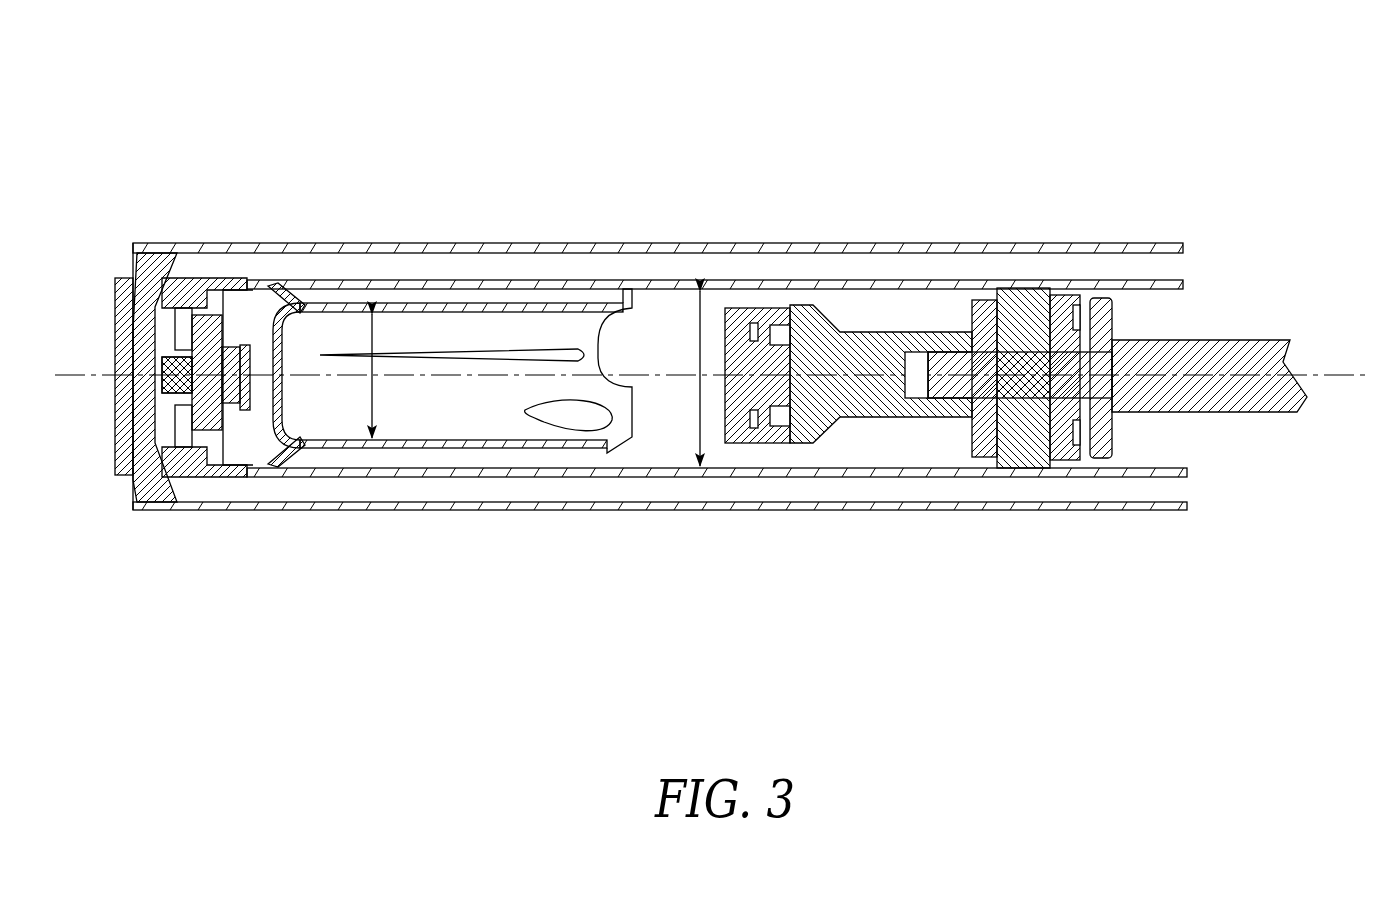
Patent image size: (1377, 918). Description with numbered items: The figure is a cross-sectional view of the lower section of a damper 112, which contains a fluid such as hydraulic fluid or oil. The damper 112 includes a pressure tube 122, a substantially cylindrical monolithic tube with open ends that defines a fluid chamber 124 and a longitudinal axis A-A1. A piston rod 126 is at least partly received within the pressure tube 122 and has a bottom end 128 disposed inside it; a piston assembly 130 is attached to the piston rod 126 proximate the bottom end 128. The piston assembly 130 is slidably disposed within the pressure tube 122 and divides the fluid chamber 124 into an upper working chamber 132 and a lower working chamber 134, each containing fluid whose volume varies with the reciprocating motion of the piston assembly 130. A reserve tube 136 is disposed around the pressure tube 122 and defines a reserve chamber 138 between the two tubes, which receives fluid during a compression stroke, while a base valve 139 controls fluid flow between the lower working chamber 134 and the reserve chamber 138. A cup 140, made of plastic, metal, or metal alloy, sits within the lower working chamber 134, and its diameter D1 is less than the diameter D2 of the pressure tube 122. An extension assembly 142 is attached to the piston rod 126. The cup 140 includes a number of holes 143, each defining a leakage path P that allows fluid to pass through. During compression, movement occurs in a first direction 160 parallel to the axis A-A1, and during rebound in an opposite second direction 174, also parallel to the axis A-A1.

The damper 112 is at (1278, 104).
The pressure tube 122 is at (483, 280).
The fluid chamber 124 is at (764, 305).
The piston rod 126 is at (1250, 414).
The bottom end 128 is at (924, 376).
The piston assembly 130 is at (1019, 298).
The upper working chamber 132 is at (1143, 429).
The lower working chamber 134 is at (647, 434).
The reserve tube 136 is at (843, 243).
The reserve chamber 138 is at (717, 271).
The base valve 139 is at (168, 322).
The cup 140 is at (385, 289).
The extension assembly 142 is at (866, 430).
The holes 143 is at (266, 309).
The first direction 160 is at (246, 213).
The second direction 174 is at (277, 547).
The leakage path P is at (265, 335).
The diameter of the cup D1 is at (372, 384).
The diameter of the pressure tube D2 is at (700, 468).
The longitudinal axis A-A1 is at (55, 374).